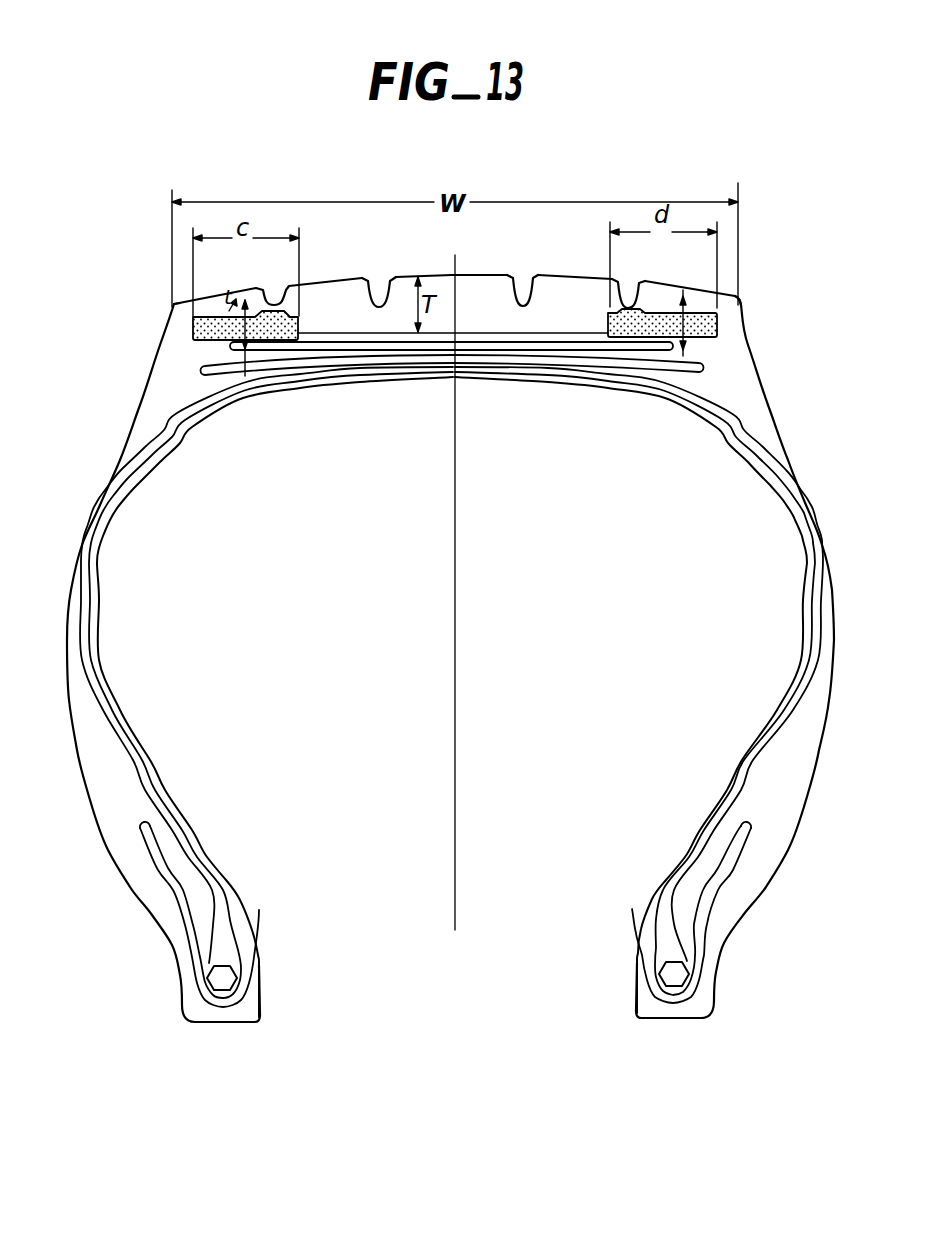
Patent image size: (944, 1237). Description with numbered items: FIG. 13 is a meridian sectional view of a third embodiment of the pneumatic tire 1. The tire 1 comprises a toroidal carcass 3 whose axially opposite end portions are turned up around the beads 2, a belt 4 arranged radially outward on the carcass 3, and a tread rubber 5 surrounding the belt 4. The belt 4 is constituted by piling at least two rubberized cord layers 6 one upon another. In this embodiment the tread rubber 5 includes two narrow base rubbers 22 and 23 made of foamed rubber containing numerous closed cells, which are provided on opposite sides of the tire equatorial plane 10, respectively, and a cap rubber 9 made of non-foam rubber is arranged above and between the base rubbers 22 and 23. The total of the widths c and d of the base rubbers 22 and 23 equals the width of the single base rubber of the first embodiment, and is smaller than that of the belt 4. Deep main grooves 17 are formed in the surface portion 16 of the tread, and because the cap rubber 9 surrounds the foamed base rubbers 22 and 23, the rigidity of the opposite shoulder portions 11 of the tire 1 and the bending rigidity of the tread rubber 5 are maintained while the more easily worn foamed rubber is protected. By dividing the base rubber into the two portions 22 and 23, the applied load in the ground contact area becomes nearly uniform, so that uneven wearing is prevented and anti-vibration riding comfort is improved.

The pneumatic tire 1 is at (772, 331).
The beads 2 is at (665, 970).
The toroidal carcass 3 is at (100, 678).
The belt 4 is at (238, 382).
The tread rubber 5 is at (430, 272).
The rubberized cord layers 6 is at (202, 370).
The cap rubber 9 is at (386, 296).
The equatorial plane 10 is at (457, 517).
The shoulder portions 11 is at (727, 307).
The surface portion of the tread 16 is at (672, 299).
The main groove 17 is at (640, 302).
The base rubber 22 is at (299, 318).
The base rubber 23 is at (608, 320).